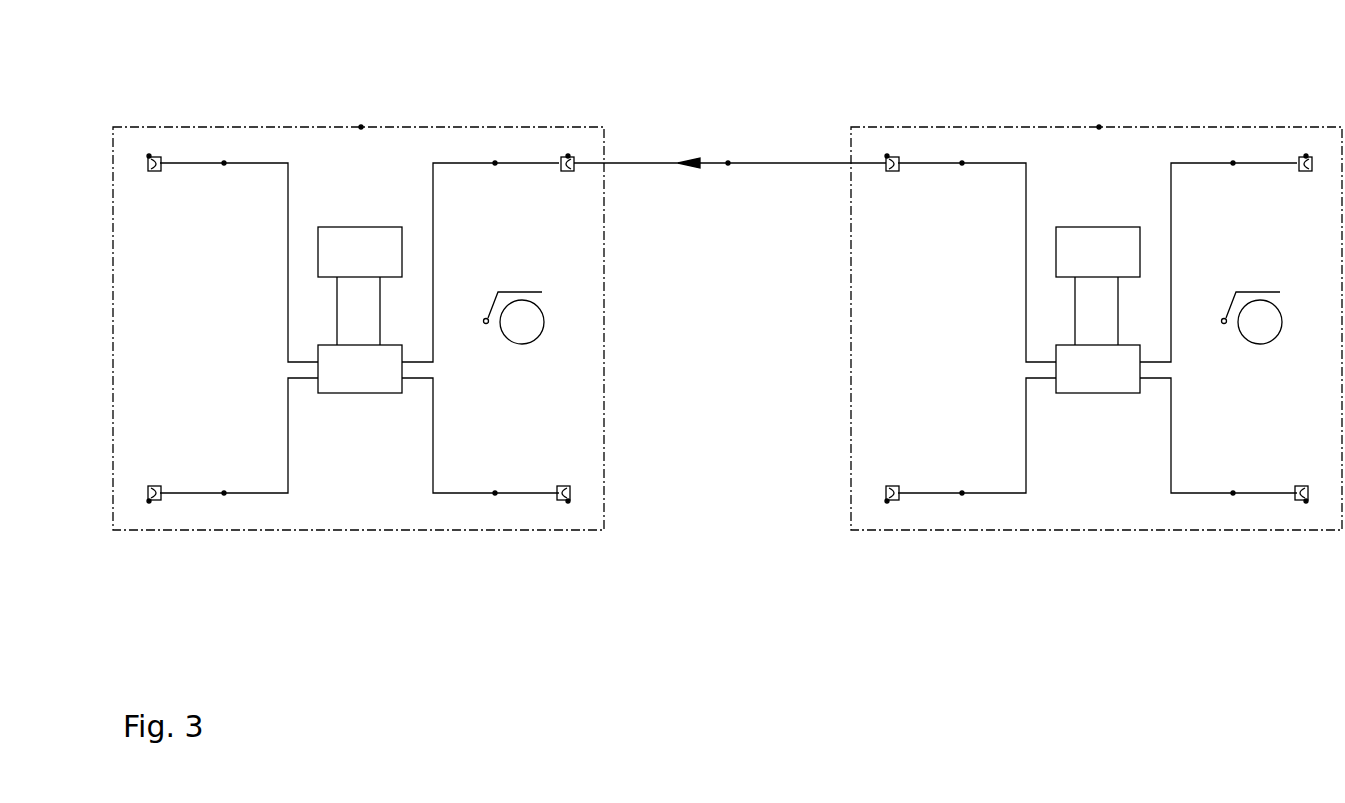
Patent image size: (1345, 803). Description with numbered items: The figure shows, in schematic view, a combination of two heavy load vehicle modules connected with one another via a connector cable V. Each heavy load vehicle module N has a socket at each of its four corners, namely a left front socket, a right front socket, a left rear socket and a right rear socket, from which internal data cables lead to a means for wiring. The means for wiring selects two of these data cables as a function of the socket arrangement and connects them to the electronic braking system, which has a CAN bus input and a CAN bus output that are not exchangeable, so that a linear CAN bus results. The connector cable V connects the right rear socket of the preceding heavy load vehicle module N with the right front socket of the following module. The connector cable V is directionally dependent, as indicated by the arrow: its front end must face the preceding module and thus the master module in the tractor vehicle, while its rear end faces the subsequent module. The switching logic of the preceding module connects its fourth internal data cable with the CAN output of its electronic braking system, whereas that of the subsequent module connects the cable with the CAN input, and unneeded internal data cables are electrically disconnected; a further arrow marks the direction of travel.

The heavy load vehicle module N is at (361, 127).
The connector cable V is at (728, 163).